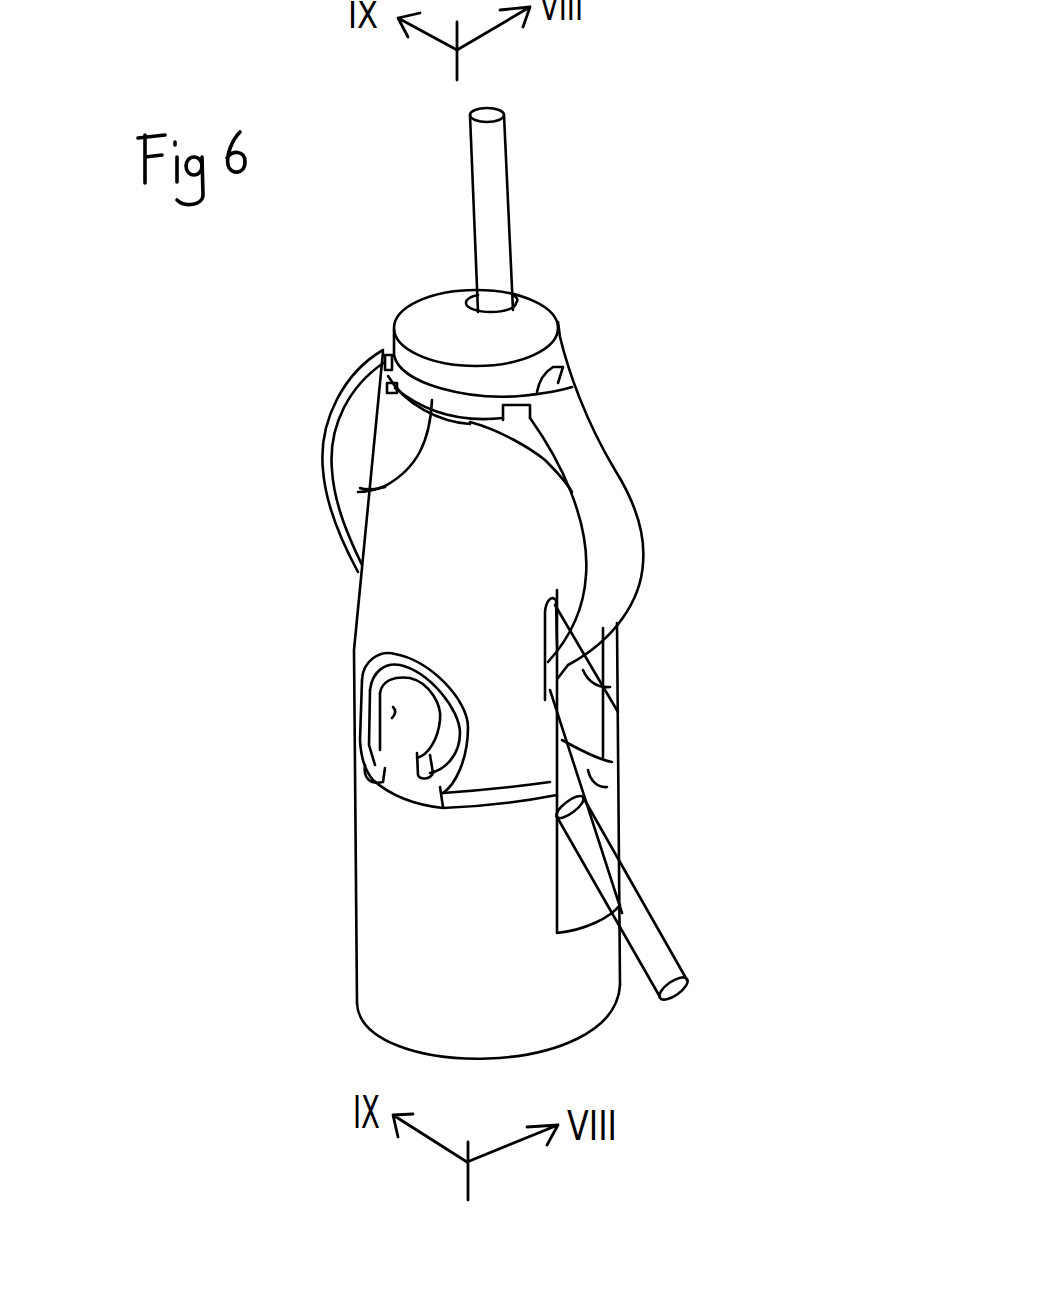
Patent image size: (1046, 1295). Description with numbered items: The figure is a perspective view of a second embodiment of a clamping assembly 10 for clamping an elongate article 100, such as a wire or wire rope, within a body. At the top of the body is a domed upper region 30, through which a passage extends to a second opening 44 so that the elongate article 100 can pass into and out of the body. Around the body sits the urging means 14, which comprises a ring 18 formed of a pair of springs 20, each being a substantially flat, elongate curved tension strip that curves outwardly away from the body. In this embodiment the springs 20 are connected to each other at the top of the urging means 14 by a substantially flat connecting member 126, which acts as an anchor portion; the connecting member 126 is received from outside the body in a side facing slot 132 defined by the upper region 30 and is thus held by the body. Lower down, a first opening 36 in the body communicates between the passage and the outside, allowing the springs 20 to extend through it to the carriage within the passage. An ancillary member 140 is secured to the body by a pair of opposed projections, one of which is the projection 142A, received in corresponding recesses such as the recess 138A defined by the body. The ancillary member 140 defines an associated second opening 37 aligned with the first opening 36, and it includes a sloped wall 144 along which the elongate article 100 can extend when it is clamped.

The clamping assembly 10 is at (335, 302).
The urging means 14 is at (632, 510).
The ring 18 is at (611, 457).
The spring 20 is at (338, 522).
The upper region 30 is at (403, 433).
The first opening 36 is at (610, 687).
The second opening 37 is at (607, 787).
The second opening 44 is at (470, 295).
The elongate article 100 is at (493, 162).
The connecting member 126 is at (385, 487).
The side facing slot 132 is at (580, 398).
The recess 138A is at (367, 667).
The ancillary member 140 is at (345, 958).
The projection 142A is at (392, 718).
The sloped wall 144 is at (570, 897).